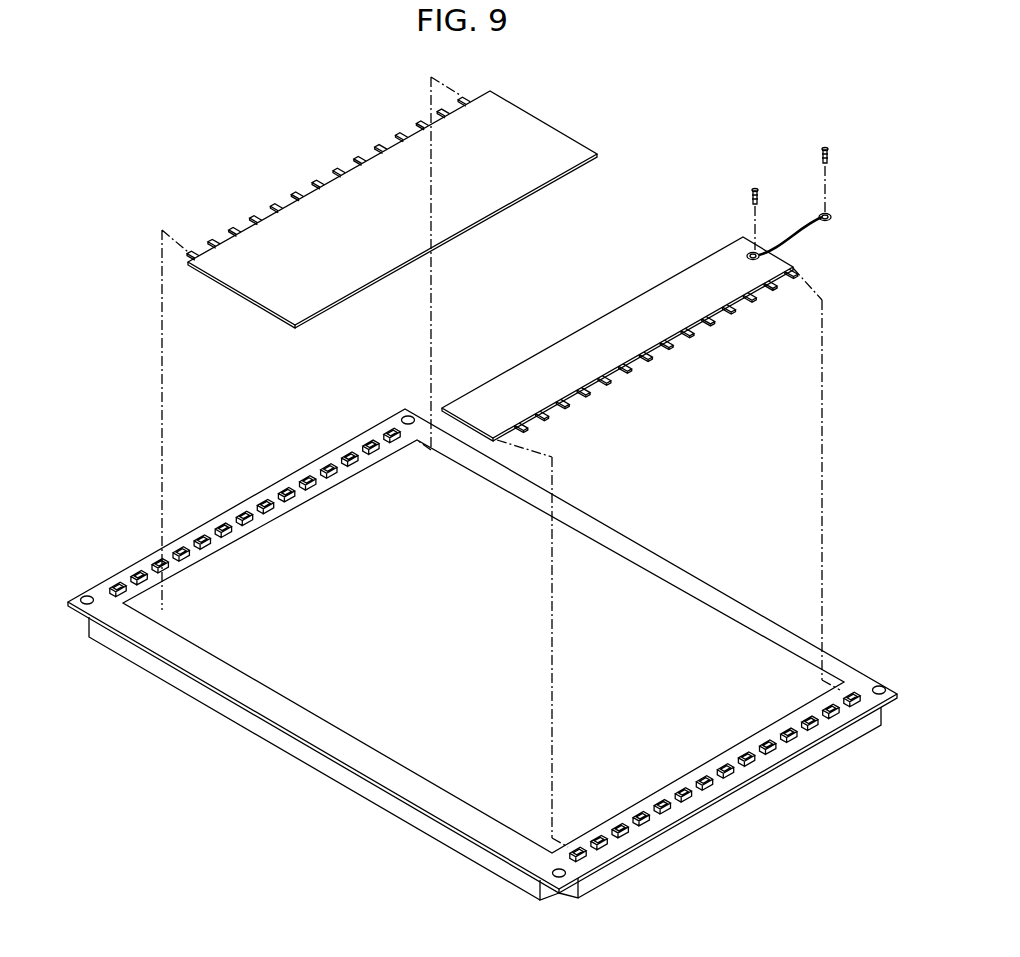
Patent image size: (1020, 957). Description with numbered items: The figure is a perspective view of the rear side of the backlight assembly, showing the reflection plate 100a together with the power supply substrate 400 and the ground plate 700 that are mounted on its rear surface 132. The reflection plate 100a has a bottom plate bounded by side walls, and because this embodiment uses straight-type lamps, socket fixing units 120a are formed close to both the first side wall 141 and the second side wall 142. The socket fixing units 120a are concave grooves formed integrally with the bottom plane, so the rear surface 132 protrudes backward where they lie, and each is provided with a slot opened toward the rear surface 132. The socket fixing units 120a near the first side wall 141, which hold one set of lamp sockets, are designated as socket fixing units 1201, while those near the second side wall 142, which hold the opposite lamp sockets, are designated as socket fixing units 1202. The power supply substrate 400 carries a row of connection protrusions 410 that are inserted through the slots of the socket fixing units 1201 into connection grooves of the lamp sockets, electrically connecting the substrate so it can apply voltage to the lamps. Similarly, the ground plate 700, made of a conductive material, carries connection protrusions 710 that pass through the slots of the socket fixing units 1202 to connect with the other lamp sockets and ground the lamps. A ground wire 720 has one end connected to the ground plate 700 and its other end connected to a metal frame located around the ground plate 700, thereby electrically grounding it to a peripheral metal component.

The reflection plate 100a is at (459, 652).
The first side wall 141 is at (88, 627).
The second side wall 142 is at (815, 757).
The rear surface 132 is at (613, 574).
The socket fixing units 120a is at (485, 640).
The socket fixing units 1201 is at (276, 480).
The socket fixing units 1202 is at (720, 794).
The power supply substrate 400 is at (392, 199).
The connection protrusions 410 is at (383, 140).
The ground plate 700 is at (657, 295).
The connection protrusions 710 is at (645, 363).
The ground wire 720 is at (798, 235).